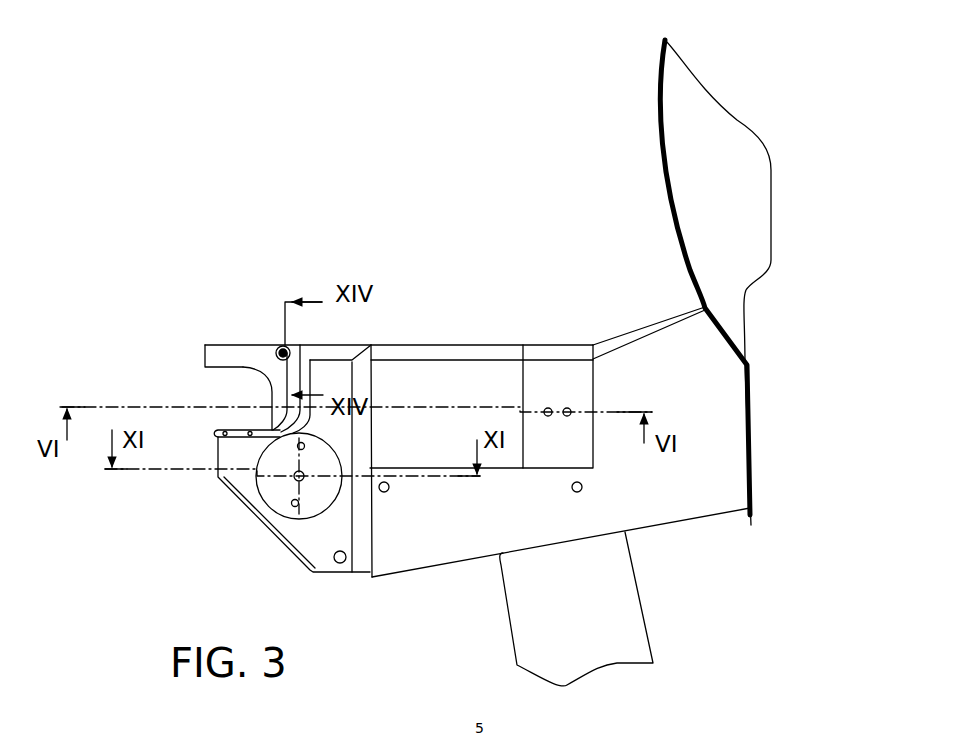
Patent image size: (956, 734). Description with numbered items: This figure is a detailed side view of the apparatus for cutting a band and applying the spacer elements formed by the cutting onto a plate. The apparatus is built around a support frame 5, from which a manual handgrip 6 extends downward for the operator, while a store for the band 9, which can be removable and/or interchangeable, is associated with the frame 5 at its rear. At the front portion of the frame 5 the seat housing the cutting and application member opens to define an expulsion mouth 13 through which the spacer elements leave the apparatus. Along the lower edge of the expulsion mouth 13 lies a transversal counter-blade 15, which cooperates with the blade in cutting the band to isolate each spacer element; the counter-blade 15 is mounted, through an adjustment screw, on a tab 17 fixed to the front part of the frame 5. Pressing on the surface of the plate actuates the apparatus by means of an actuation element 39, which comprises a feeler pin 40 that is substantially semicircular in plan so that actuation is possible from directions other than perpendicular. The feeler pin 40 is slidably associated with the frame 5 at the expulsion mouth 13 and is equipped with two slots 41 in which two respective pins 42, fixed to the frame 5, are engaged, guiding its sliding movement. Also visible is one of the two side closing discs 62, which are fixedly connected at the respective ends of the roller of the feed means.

The support frame 5 is at (480, 340).
The manual handgrip 6 is at (612, 618).
The store for the band 9 is at (718, 98).
The expulsion mouth 13 is at (255, 390).
The transversal counter-blade 15 is at (238, 428).
The tab 17 is at (281, 540).
The actuation element 39 is at (279, 320).
The feeler pin 40 is at (215, 357).
The slots 41 is at (277, 343).
The pins 42 is at (287, 351).
The side closing disc 62 is at (277, 497).